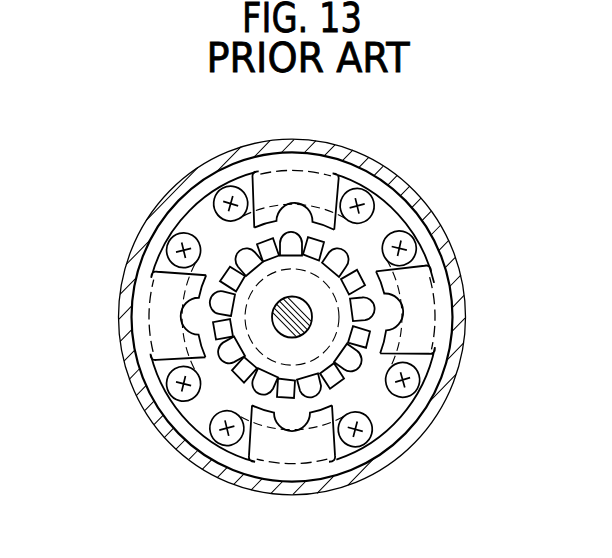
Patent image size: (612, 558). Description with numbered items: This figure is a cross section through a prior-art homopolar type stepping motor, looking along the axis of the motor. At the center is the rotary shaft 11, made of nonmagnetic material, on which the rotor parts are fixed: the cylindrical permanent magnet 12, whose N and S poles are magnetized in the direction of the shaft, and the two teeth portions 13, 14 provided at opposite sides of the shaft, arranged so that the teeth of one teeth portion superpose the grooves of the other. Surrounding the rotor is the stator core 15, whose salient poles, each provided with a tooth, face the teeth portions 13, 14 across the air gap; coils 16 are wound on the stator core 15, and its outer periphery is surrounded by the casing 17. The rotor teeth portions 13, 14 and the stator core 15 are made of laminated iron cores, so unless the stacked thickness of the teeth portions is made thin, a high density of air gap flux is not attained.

The rotary shaft 11 is at (296, 336).
The permanent magnet 12 is at (392, 278).
The teeth portion 13 is at (243, 367).
The teeth portion 14 is at (245, 258).
The stator core 15 is at (335, 168).
The coils 16 is at (218, 193).
The casing 17 is at (220, 153).